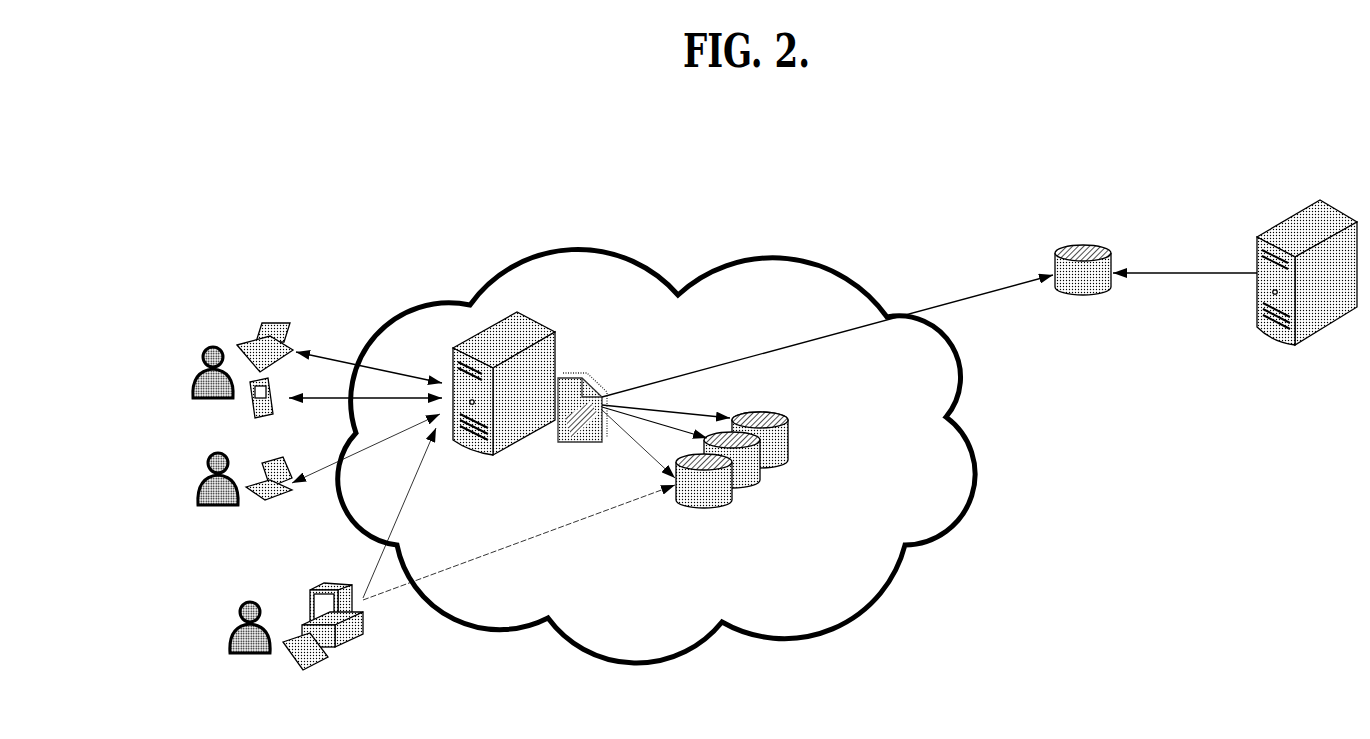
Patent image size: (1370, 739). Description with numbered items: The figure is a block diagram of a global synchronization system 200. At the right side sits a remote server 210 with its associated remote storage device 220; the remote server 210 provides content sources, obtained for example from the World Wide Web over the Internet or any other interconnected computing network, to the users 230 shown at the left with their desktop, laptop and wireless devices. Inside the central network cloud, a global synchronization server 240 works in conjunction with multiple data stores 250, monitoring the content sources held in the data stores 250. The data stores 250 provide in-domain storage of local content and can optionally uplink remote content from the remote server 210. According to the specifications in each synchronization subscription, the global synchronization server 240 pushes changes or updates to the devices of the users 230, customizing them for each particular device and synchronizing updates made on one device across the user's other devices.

The global synchronization system 200 is at (461, 146).
The remote server 210 is at (1287, 216).
The remote storage device 220 is at (1085, 244).
The users 230 is at (202, 340).
The global synchronization server 240 is at (542, 322).
The data stores 250 is at (688, 515).